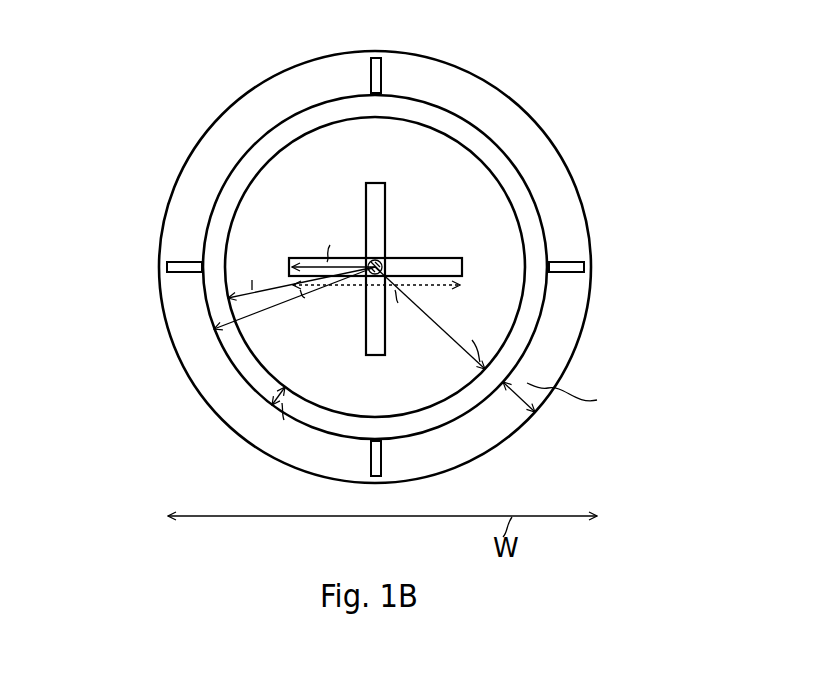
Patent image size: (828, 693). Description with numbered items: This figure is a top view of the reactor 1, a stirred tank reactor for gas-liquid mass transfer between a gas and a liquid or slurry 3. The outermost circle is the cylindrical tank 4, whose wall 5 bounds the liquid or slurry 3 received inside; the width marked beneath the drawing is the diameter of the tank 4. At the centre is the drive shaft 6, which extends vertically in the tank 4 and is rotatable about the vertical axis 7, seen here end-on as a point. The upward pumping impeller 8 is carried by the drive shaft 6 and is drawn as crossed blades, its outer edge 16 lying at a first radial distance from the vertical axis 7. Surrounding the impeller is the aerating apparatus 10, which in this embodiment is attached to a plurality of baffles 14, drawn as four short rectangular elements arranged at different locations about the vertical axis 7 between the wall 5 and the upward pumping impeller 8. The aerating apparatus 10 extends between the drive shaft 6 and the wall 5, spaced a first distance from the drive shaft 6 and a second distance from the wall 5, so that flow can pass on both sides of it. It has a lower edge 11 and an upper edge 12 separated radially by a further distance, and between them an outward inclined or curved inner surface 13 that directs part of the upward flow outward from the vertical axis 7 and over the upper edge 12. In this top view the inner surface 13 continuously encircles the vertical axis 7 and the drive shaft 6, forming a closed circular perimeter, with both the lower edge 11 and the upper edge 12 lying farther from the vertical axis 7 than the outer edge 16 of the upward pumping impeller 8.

The reactor 1 is at (135, 108).
The liquid or slurry 3 is at (449, 198).
The tank 4 is at (292, 66).
The wall 5 is at (175, 178).
The drive shaft 6 is at (378, 258).
The vertical axis 7 is at (385, 263).
The upward pumping impeller 8 is at (372, 213).
The aerating apparatus 10 is at (497, 150).
The lower edge 11 is at (287, 383).
The upper edge 12 is at (270, 406).
The inner surface 13 is at (318, 413).
The baffles 14 is at (377, 57).
The outer edge 16 is at (290, 258).